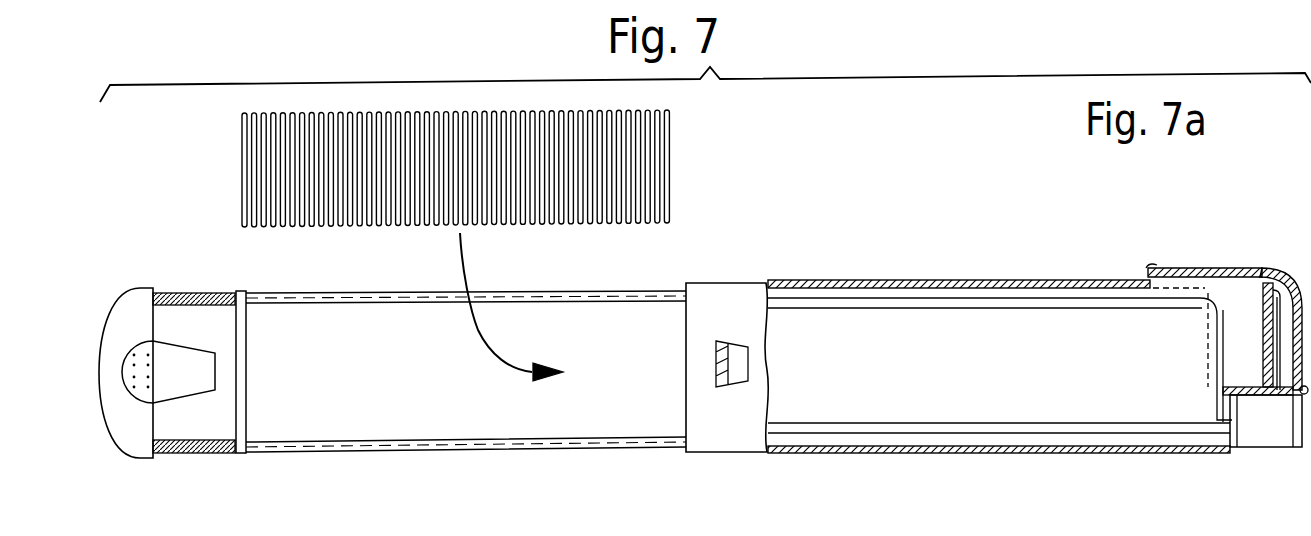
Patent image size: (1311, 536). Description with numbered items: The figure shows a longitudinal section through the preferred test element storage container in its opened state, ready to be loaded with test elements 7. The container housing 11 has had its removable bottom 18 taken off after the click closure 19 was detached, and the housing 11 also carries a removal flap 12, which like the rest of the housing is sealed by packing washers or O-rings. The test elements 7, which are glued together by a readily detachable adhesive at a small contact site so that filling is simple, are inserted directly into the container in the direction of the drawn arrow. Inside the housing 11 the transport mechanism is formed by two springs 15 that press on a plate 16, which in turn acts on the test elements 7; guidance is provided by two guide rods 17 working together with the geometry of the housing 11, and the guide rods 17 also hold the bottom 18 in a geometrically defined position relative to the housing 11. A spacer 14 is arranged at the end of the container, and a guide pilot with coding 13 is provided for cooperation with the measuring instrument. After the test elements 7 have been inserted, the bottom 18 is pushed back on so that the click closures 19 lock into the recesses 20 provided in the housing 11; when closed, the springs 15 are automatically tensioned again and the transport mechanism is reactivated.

In FIG. 7, the test element with edge profile 7 is at (650, 168).
In FIG. 7, the housing of the storage container 11 is at (898, 281).
In FIG. 7A, the flap 12 is at (1193, 270).
In FIG. 7A, the guide pilot with coding 13 is at (1263, 305).
In FIG. 7A, the spacer 14 is at (1245, 400).
In FIG. 7, the spring 15 is at (203, 298).
In FIG. 7, the plate 16 is at (243, 420).
In FIG. 7, the guide rod 17 is at (672, 291).
In FIG. 7, the removable bottom 18 is at (122, 318).
In FIG. 7, the click closure 19 is at (177, 363).
In FIG. 7, the recess for the click closure 20 is at (733, 353).